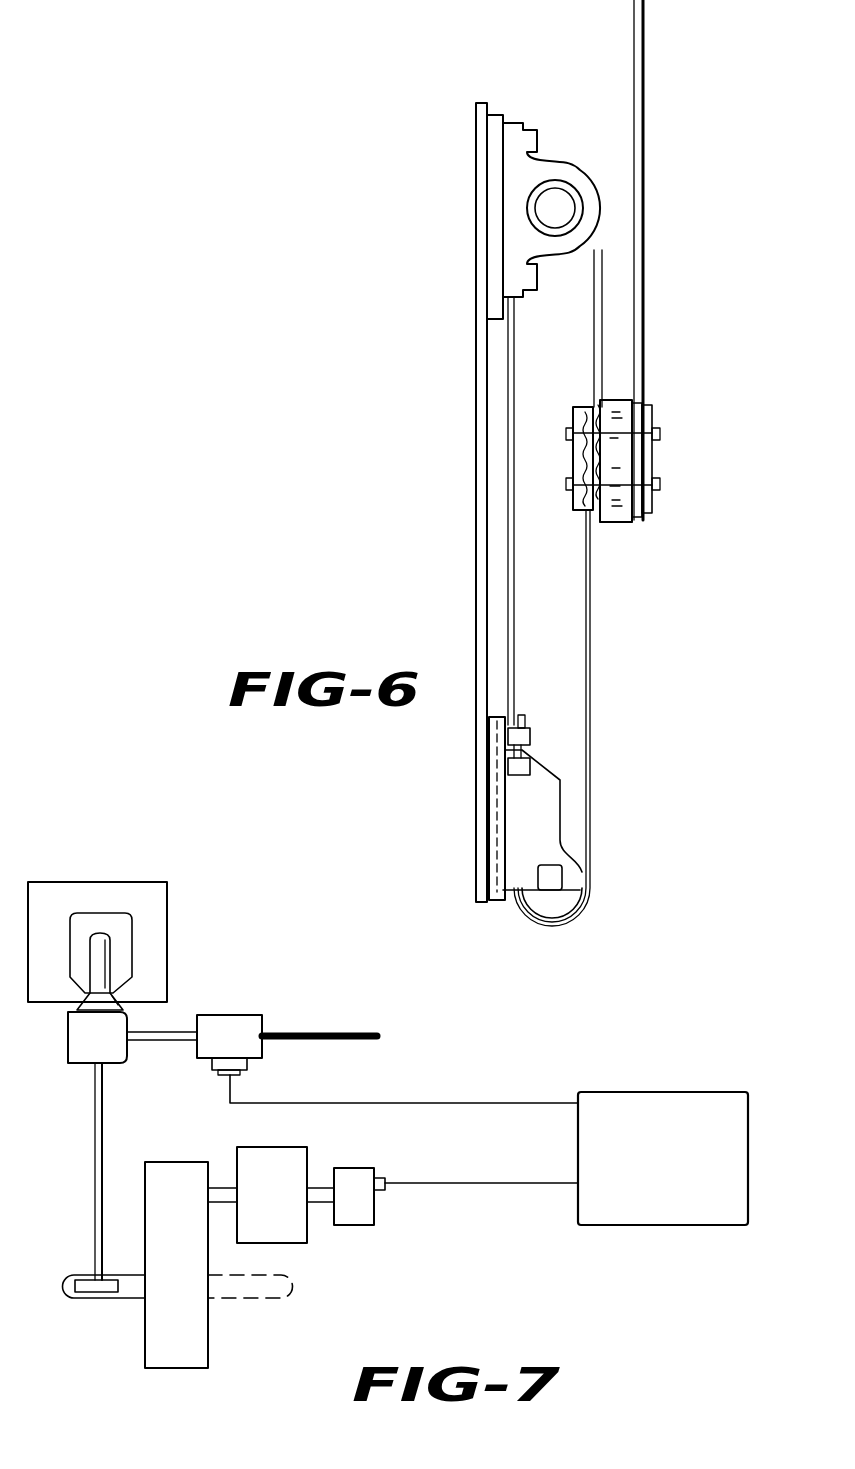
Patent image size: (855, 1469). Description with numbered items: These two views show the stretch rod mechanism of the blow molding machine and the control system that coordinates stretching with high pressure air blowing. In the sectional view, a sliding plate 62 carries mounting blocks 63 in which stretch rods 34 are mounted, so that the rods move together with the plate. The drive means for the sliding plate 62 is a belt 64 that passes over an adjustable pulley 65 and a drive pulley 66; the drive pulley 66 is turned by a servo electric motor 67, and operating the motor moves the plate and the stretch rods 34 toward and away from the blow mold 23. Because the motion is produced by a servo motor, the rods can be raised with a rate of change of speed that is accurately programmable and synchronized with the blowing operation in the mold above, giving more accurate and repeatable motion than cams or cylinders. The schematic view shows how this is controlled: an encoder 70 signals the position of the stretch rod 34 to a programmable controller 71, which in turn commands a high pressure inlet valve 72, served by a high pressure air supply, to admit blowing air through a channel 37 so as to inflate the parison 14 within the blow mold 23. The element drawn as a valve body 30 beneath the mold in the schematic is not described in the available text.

In FIG. 7, the parison 14 is at (102, 940).
In FIG. 7, the blow mold 23 is at (152, 942).
In FIG. 7, the valve body 30 is at (83, 1040).
In FIG. 6, the stretch rods 34 is at (645, 259).
In FIG. 7, the stretch rods 34 is at (97, 1167).
In FIG. 7, the channel 37 is at (107, 1037).
In FIG. 6, the sliding plate 62 is at (617, 517).
In FIG. 6, the mounting blocks 63 is at (653, 467).
In FIG. 6, the belt 64 is at (592, 733).
In FIG. 7, the belt 64 is at (180, 1180).
In FIG. 6, the adjustable pulley 65 is at (563, 904).
In FIG. 6, the drive pulley 66 is at (563, 203).
In FIG. 7, the servo electric motor 67 is at (290, 1230).
In FIG. 7, the encoder 70 is at (367, 1218).
In FIG. 7, the programmable controller 71 is at (708, 1110).
In FIG. 7, the high pressure inlet valve 72 is at (247, 1027).